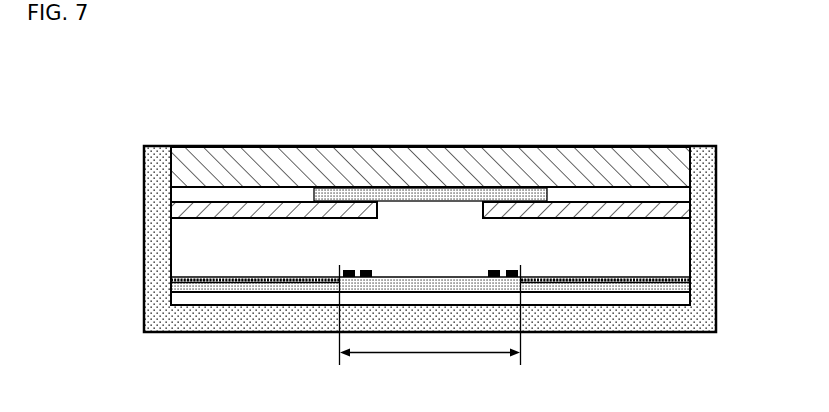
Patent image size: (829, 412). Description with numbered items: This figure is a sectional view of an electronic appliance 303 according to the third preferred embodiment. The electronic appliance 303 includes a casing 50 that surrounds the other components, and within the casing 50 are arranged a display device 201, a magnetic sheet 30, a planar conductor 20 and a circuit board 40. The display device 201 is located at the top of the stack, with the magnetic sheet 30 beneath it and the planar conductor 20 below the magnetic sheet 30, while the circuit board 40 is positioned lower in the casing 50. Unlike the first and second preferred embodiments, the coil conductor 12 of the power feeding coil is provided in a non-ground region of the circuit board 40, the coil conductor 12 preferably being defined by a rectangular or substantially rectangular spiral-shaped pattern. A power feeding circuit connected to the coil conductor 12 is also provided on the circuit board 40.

The electronic appliance 303 is at (745, 88).
The casing 50 is at (705, 238).
The display device 201 is at (350, 148).
The magnetic sheet 30 is at (432, 188).
The planar conductor 20 is at (617, 210).
The circuit board 40 is at (612, 288).
The coil conductor 12 is at (494, 269).